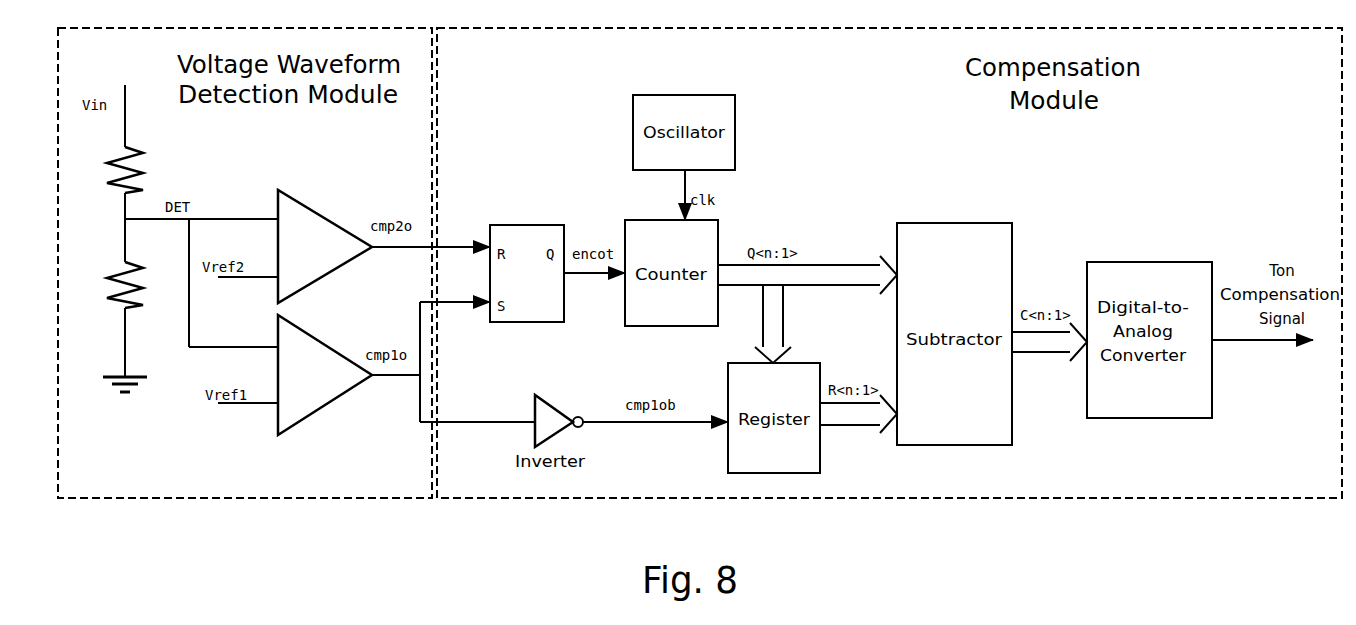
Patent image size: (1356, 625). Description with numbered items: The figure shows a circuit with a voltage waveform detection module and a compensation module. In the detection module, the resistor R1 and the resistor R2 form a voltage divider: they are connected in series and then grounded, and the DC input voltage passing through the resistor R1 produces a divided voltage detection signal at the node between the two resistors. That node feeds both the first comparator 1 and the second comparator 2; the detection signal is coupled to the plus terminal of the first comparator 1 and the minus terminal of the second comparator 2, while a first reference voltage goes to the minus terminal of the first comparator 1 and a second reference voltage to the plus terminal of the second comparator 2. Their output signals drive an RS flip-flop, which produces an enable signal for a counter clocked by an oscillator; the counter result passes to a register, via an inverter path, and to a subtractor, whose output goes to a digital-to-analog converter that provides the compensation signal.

The first comparator 1 is at (325, 375).
The second comparator 2 is at (325, 246).
The resistor R1 is at (138, 170).
The resistor R2 is at (138, 285).